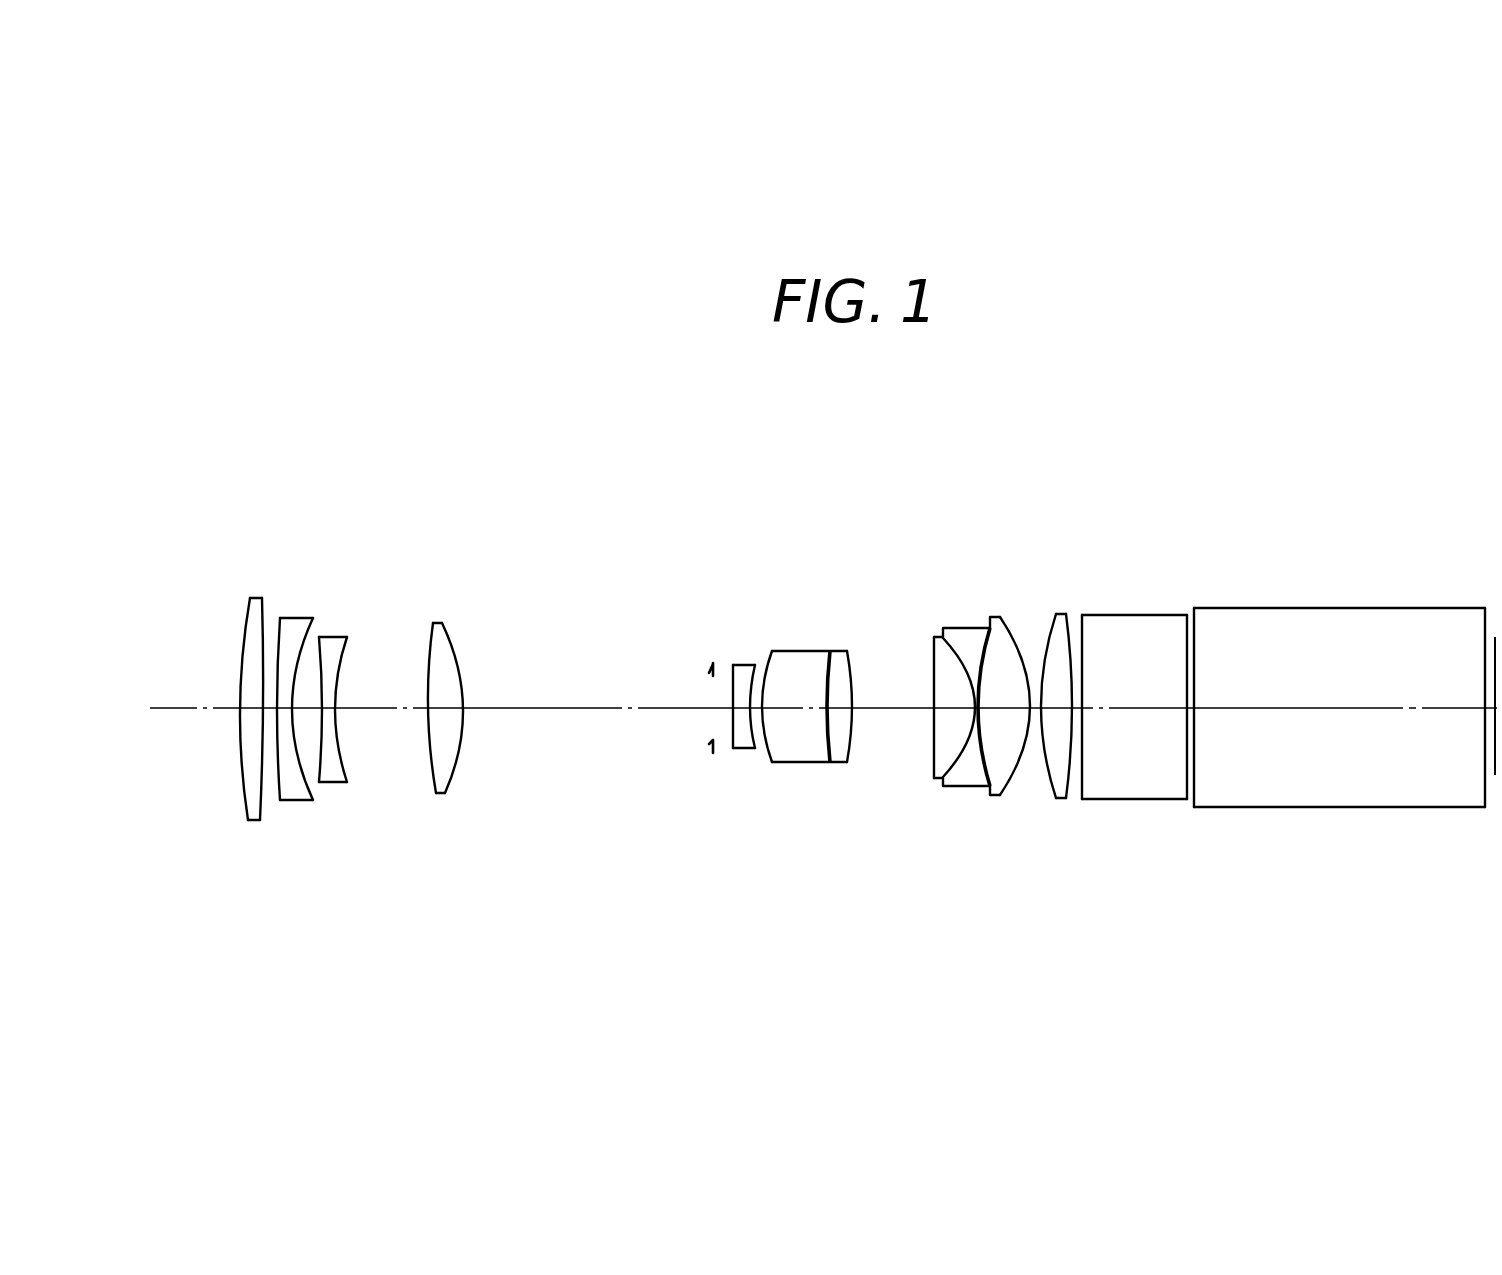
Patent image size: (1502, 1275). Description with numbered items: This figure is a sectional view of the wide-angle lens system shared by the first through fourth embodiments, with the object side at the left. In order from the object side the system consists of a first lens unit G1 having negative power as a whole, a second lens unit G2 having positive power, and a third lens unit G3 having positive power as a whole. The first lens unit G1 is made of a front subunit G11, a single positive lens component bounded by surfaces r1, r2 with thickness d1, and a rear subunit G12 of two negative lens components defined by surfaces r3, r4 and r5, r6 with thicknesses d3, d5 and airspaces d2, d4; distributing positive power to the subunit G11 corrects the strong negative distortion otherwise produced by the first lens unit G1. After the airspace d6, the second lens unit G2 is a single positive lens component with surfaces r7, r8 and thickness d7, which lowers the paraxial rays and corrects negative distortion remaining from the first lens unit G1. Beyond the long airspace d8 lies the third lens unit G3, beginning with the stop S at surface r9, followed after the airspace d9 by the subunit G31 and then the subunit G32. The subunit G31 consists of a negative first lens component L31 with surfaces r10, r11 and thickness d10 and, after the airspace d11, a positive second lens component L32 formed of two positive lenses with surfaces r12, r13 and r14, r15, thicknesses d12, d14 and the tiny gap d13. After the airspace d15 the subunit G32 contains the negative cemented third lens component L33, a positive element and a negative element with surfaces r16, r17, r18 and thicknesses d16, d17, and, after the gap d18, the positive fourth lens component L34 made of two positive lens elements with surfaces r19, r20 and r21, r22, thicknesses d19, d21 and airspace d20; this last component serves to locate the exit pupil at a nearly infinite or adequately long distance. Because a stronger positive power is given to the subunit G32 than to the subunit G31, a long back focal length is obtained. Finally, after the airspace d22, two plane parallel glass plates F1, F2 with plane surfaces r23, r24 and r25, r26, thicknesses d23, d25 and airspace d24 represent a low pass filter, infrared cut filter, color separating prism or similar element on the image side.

The first lens unit G1 is at (370, 452).
The 1-1 subunit G11 is at (271, 928).
The 1-2 subunit G12 is at (358, 928).
The second lens unit G2 is at (477, 452).
The third lens unit G3 is at (1082, 452).
The 3-1 subunit G31 is at (862, 975).
The 3-2 subunit G32 is at (1084, 975).
The first lens component L31 is at (760, 928).
The second lens component L32 is at (862, 928).
The third lens component L33 is at (982, 928).
The fourth lens component L34 is at (1084, 928).
The stop S is at (710, 747).
The first plane-parallel plate (filter) F1 is at (1144, 687).
The second plane-parallel plate (filter/prism) F2 is at (1339, 693).
The radius of curvature of first surface r1 is at (245, 632).
The radius of curvature of second surface r2 is at (262, 626).
The radius of curvature of third surface r3 is at (279, 624).
The radius of curvature of fourth surface r4 is at (306, 645).
The radius of curvature of fifth surface r5 is at (322, 640).
The radius of curvature of sixth surface r6 is at (342, 648).
The radius of curvature of seventh surface r7 is at (428, 650).
The radius of curvature of eighth surface r8 is at (451, 647).
The stop surface r9 is at (712, 669).
The radius of curvature of tenth surface r10 is at (733, 670).
The radius of curvature of eleventh surface r11 is at (751, 676).
The radius of curvature of twelfth surface r12 is at (770, 666).
The radius of curvature of thirteenth surface r13 is at (826, 668).
The radius of curvature of fourteenth surface r14 is at (833, 668).
The radius of curvature of fifteenth surface r15 is at (853, 675).
The radius of curvature of sixteenth surface r16 is at (932, 660).
The radius of curvature of seventeenth surface r17 is at (960, 647).
The radius of curvature of eighteenth surface r18 is at (983, 647).
The radius of curvature of nineteenth surface r19 is at (995, 617).
The radius of curvature of twentieth surface r20 is at (1022, 647).
The radius of curvature of twenty-first surface r21 is at (1047, 647).
The radius of curvature of twenty-second surface r22 is at (1070, 643).
The radius of curvature of twenty-third surface r23 is at (1083, 645).
The radius of curvature of twenty-fourth surface r24 is at (1187, 645).
The radius of curvature of twenty-fifth surface r25 is at (1195, 650).
The radius of curvature of twenty-sixth surface r26 is at (1483, 643).
The axial thickness d1 is at (252, 712).
The axial airspace d2 is at (268, 712).
The axial thickness d3 is at (287, 712).
The axial airspace d4 is at (304, 712).
The axial thickness d5 is at (330, 712).
The axial airspace d6 is at (373, 712).
The axial thickness d7 is at (447, 712).
The axial airspace d8 is at (548, 712).
The axial airspace d9 is at (722, 711).
The axial thickness d10 is at (738, 750).
The axial airspace d11 is at (762, 712).
The axial thickness d12 is at (797, 712).
The axial airspace d13 is at (822, 712).
The axial thickness d14 is at (840, 712).
The axial airspace d15 is at (882, 712).
The axial thickness d16 is at (945, 712).
The axial thickness d17 is at (972, 712).
The axial airspace d18 is at (982, 712).
The axial thickness d19 is at (1003, 712).
The axial airspace d20 is at (1036, 712).
The axial thickness d21 is at (1057, 712).
The axial airspace d22 is at (1077, 712).
The axial thickness d23 is at (1140, 712).
The axial airspace d24 is at (1191, 712).
The axial thickness d25 is at (1337, 712).